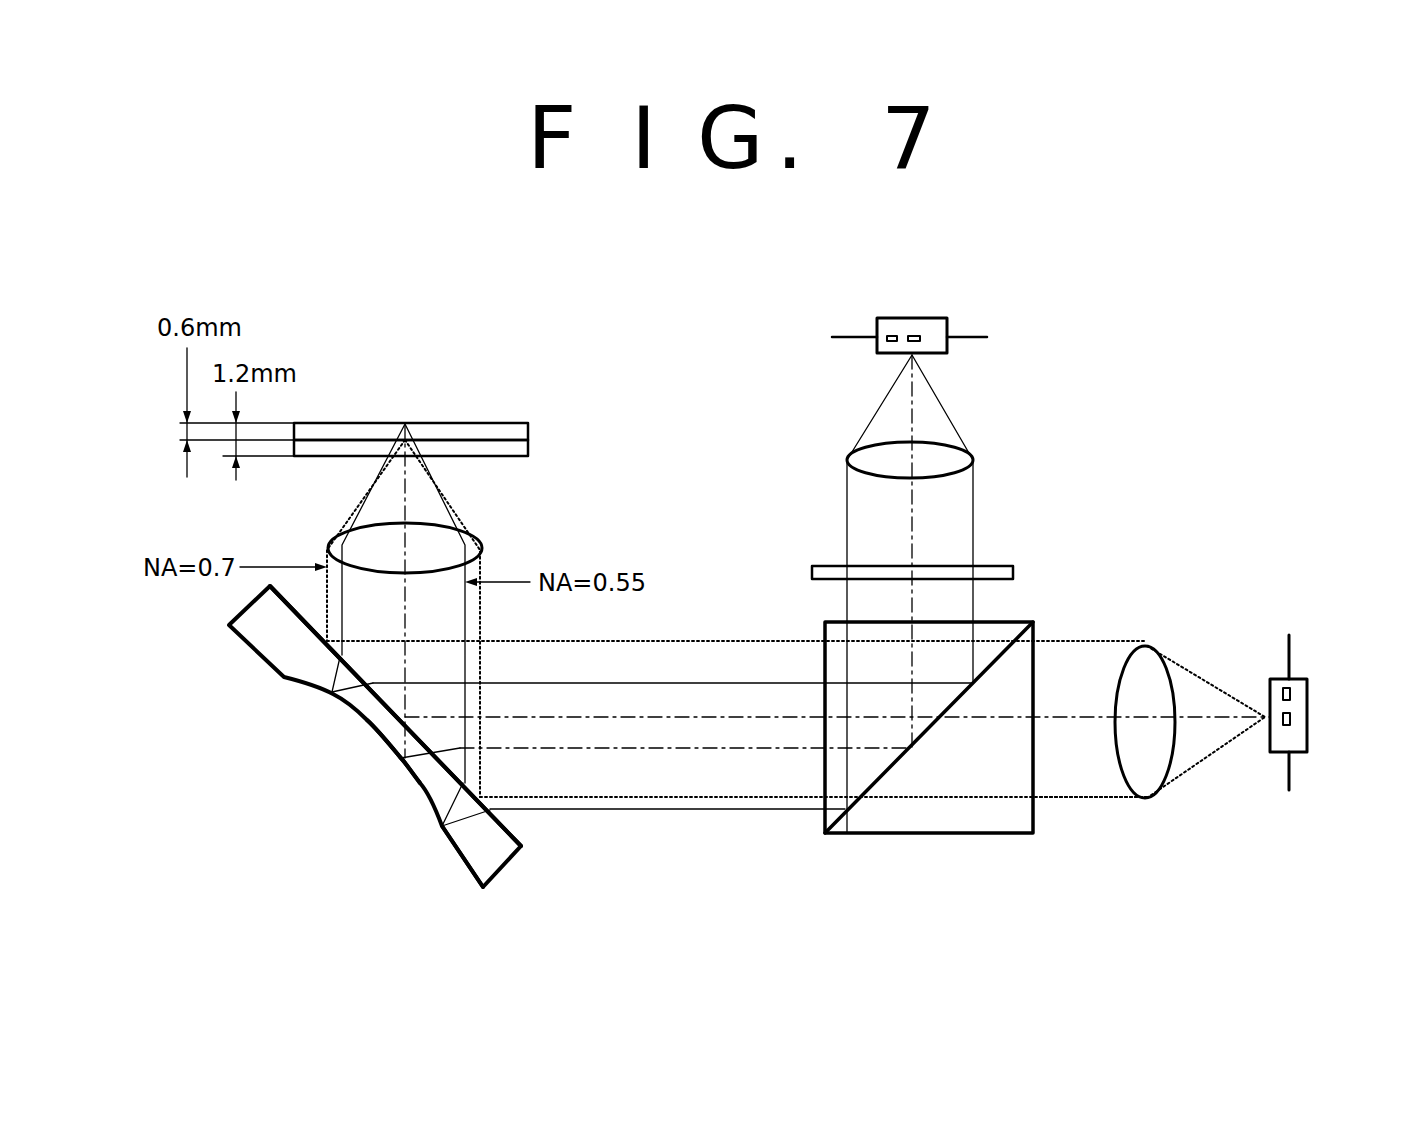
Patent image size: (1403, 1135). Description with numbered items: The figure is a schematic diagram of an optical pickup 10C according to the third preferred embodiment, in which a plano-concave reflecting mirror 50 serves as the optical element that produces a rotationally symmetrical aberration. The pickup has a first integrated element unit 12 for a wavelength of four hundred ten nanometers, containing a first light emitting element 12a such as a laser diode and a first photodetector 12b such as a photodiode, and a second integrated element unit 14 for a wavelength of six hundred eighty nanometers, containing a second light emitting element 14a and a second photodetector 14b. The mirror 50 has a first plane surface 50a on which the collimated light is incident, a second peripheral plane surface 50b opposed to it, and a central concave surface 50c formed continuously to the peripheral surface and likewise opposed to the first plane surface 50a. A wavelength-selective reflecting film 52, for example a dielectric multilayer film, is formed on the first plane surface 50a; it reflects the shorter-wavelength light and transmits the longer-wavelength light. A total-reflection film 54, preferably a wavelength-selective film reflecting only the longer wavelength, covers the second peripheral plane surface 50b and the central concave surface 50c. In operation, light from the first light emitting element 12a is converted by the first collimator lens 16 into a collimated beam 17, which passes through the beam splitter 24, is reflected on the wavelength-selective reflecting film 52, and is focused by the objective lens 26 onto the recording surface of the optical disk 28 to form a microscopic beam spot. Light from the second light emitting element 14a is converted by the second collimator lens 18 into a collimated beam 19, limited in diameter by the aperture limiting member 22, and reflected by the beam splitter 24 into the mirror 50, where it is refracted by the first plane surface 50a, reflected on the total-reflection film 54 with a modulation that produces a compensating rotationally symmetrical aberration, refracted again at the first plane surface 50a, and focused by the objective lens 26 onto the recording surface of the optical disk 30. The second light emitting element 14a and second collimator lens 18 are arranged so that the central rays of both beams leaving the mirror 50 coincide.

The optical pickup 10C is at (541, 391).
The first integrated element unit 12 is at (1300, 744).
The first light emitting element 12a is at (1291, 719).
The first photodetector 12b is at (1291, 692).
The second integrated element unit 14 is at (940, 318).
The second light emitting element 14a is at (915, 333).
The second photodetector 14b is at (887, 334).
The first collimator lens 16 is at (1148, 652).
The collimated beam 17 is at (1103, 803).
The second collimator lens 18 is at (960, 458).
The collimated beam 19 is at (846, 518).
The aperture limiting member 22 is at (993, 565).
The beam splitter 24 is at (930, 836).
The objective lens 26 is at (483, 548).
The optical disk 28 is at (470, 452).
The optical disk 30 is at (372, 426).
The plano-concave reflecting mirror 50 is at (249, 650).
The first plane surface 50a is at (521, 829).
The second peripheral plane surface 50b is at (461, 868).
The central concave surface 50c is at (403, 768).
The wavelength-selective reflecting film 52 is at (464, 761).
The total-reflection film 54 is at (357, 719).